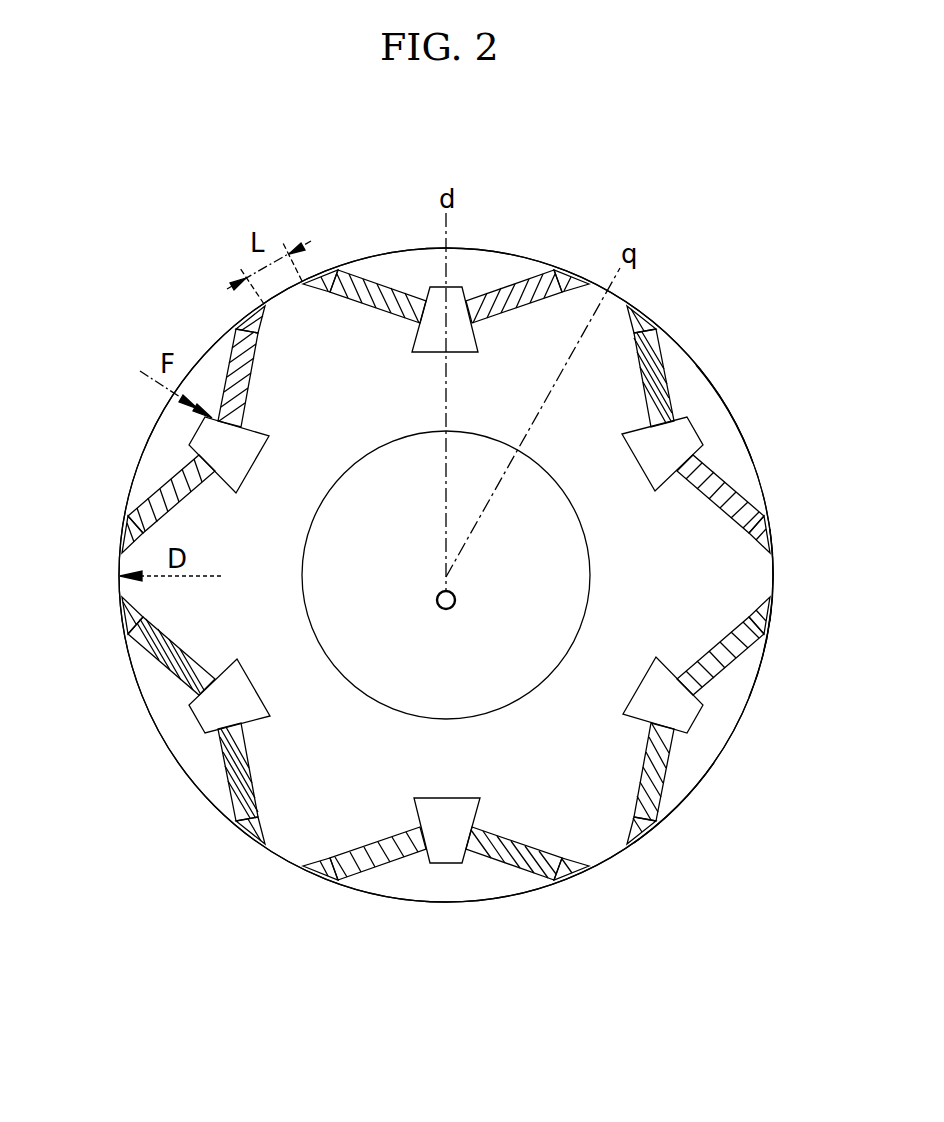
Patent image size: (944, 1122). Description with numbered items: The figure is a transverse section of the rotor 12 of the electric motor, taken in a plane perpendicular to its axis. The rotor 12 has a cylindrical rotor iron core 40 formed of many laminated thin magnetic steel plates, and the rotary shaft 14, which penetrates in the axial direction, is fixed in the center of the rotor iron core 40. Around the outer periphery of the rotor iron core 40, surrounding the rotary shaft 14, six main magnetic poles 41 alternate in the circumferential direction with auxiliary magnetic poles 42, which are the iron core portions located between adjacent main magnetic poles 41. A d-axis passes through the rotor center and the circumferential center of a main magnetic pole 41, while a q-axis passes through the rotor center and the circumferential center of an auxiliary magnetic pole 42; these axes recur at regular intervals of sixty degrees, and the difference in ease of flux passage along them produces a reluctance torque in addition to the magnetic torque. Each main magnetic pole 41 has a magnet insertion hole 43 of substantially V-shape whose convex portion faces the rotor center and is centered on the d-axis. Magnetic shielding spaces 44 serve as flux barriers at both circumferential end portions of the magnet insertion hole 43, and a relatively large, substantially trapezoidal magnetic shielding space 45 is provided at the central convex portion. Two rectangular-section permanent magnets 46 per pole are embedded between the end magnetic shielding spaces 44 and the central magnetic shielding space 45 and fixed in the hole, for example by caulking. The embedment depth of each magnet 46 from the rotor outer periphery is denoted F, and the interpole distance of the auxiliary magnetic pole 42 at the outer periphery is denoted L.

The rotor 12 is at (748, 303).
The rotary shaft 14 is at (507, 706).
The rotor iron core 40 is at (312, 797).
The main magnetic pole 41 is at (713, 422).
The auxiliary magnetic pole 42 is at (753, 575).
The magnet insertion hole 43 is at (686, 811).
The magnetic shielding space 44 is at (125, 628).
The magnetic shielding space 45 is at (445, 852).
The permanent magnet 46 is at (765, 658).